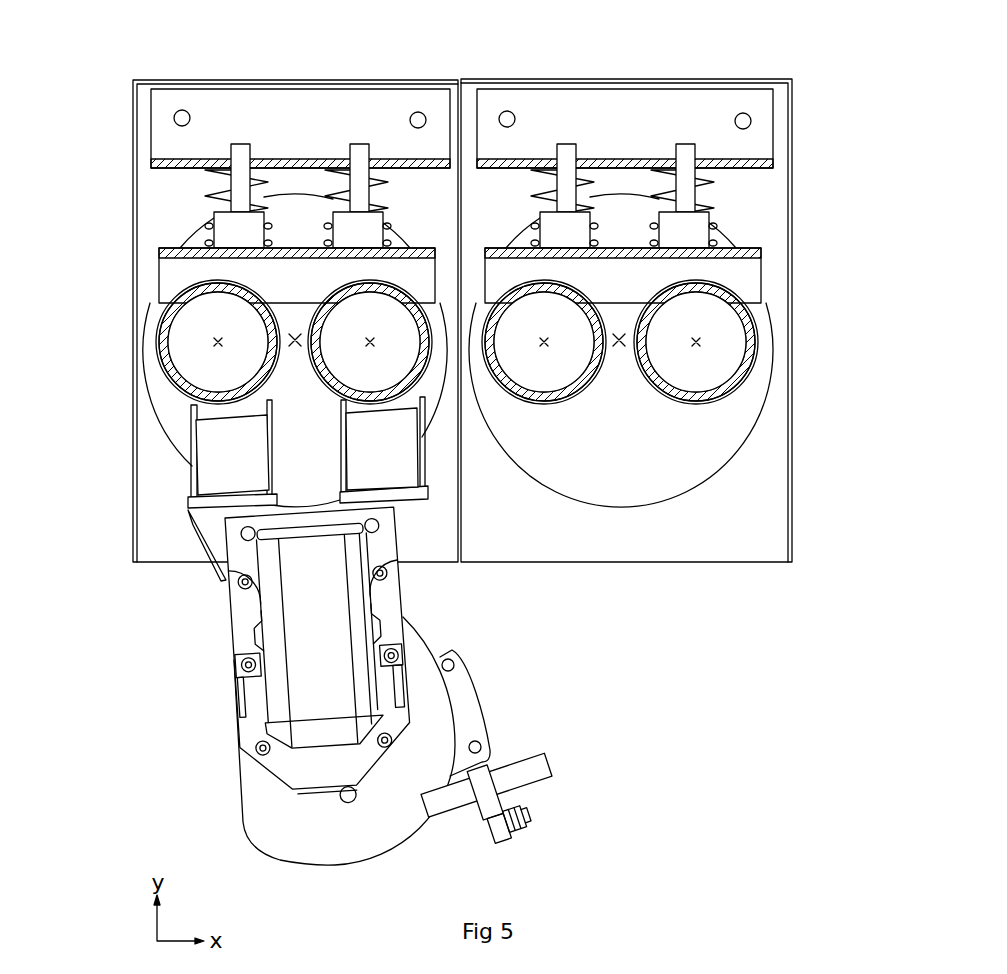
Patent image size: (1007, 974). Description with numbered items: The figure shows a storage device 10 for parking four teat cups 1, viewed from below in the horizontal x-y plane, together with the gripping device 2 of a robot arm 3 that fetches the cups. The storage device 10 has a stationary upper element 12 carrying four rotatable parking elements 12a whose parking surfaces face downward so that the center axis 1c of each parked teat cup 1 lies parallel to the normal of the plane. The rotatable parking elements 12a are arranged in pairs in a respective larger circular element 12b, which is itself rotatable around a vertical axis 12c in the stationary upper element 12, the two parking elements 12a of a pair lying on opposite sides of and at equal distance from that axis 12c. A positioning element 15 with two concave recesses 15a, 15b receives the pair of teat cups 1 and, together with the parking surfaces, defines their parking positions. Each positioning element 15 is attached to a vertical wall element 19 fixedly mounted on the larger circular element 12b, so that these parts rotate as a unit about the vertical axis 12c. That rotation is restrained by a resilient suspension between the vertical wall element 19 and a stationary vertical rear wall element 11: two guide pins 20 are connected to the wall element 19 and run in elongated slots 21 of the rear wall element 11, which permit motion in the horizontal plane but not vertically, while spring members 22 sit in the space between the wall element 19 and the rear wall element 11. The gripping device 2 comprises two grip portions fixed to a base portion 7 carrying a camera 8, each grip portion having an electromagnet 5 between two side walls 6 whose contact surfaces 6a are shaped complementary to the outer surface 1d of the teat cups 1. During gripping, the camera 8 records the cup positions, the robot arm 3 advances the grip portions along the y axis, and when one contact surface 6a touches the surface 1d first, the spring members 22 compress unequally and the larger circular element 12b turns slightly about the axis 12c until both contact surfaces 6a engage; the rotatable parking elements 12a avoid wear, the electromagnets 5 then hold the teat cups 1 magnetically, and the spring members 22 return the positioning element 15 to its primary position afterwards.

The storage device 10 is at (223, 68).
The stationary vertical rear wall element 11 is at (180, 160).
The stationary upper element 12 is at (698, 527).
The rotatable parking element 12a is at (160, 319).
The larger circular element 12b is at (176, 430).
The vertical axis 12c is at (295, 347).
The positioning element 15 is at (175, 280).
The concave recess 15a is at (202, 287).
The concave recess 15b is at (340, 296).
The vertical wall element 19 is at (180, 250).
The guide pin 20 is at (223, 187).
The elongated slot 21 is at (347, 160).
The spring member 22 is at (340, 192).
The teat cup 1 is at (165, 357).
The center axis 1c is at (218, 340).
The outer surface 1d is at (224, 399).
The electromagnet 5 is at (382, 443).
The side wall 6 is at (190, 446).
The contact surface 6a is at (178, 423).
The base portion 7 is at (388, 535).
The camera 8 is at (317, 575).
The gripping device 2 is at (215, 762).
The robot arm 3 is at (547, 778).